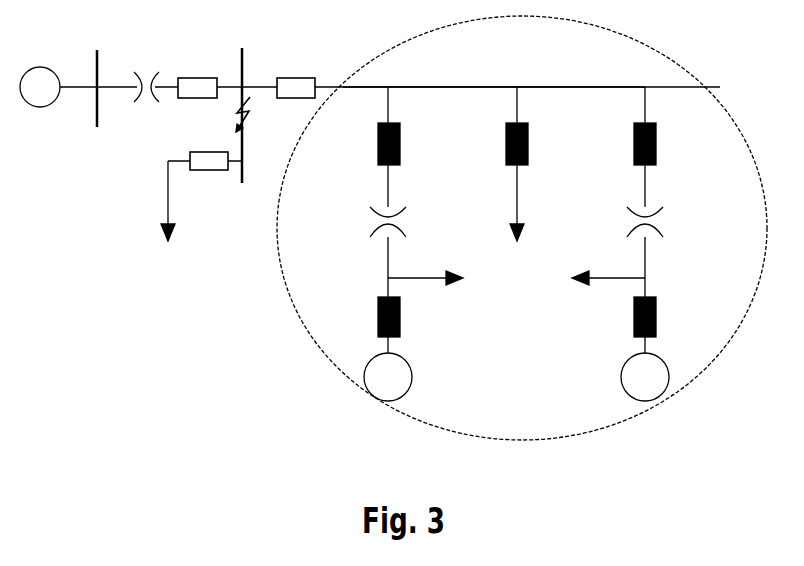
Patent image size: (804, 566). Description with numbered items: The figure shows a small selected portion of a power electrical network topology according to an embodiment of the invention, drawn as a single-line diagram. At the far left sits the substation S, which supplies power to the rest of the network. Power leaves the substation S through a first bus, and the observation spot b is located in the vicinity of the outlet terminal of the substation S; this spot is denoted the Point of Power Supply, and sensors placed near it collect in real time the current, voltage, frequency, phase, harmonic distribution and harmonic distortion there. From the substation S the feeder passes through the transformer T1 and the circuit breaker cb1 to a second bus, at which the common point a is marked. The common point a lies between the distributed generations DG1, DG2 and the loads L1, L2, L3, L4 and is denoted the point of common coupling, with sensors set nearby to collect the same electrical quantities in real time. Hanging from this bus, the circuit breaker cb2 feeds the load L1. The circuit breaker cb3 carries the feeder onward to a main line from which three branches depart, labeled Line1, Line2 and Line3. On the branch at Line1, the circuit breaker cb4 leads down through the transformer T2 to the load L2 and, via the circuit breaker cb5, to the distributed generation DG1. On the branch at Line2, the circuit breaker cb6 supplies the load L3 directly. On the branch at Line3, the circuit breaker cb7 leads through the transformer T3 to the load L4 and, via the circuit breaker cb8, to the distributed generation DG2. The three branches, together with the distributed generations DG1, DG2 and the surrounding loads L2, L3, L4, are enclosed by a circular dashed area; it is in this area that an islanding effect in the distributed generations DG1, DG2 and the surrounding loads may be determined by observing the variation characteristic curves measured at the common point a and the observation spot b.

The substation S is at (40, 87).
The bus bar bus is at (168, 105).
The observation spot b is at (83, 67).
The common point a is at (249, 95).
The transformer T1 is at (146, 103).
The circuit breaker cb1 is at (197, 76).
The circuit breaker cb2 is at (205, 149).
The circuit breaker cb3 is at (296, 76).
The circuit breaker cb4 is at (410, 126).
The circuit breaker cb5 is at (411, 325).
The circuit breaker cb6 is at (539, 126).
The circuit breaker cb7 is at (667, 126).
The circuit breaker cb8 is at (667, 325).
The load L1 is at (183, 203).
The load L2 is at (425, 265).
The load L3 is at (518, 216).
The load L4 is at (606, 265).
The feeder line 1 Line1 is at (360, 76).
The feeder line 2 Line2 is at (452, 76).
The feeder line 3 Line3 is at (581, 76).
The transformer T2 is at (372, 231).
The transformer T3 is at (659, 231).
The distributed generation DG1 is at (388, 377).
The distributed generation DG2 is at (645, 377).